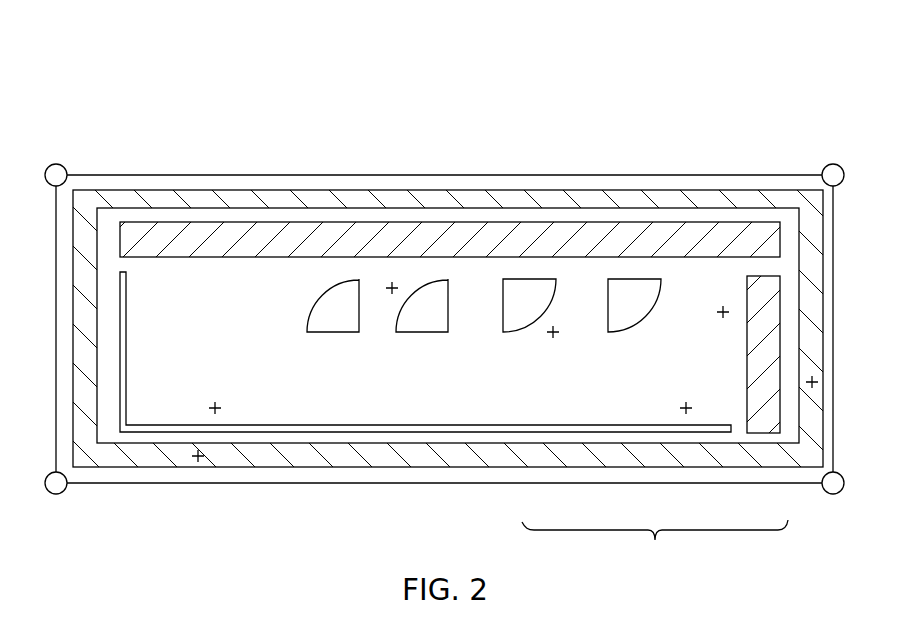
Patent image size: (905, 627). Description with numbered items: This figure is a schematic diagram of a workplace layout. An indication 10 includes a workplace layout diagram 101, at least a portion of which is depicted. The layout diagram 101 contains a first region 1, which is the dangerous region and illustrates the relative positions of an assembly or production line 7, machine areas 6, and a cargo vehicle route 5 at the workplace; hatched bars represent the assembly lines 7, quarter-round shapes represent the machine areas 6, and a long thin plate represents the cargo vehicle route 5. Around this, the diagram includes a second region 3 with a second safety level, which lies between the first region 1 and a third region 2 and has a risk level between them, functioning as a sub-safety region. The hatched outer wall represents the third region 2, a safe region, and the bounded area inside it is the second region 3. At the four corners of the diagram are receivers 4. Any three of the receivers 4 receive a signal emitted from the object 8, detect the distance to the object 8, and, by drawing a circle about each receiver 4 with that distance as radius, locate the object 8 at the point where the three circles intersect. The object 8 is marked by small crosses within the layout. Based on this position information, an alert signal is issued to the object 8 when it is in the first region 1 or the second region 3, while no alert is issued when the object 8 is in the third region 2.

The first region 1 is at (655, 541).
The third region 2 is at (327, 455).
The second region 3 is at (563, 403).
The receiver 4 is at (59, 166).
The cargo vehicle route 5 is at (630, 428).
The machine area 6 is at (336, 322).
The assembly or production line 7 is at (648, 235).
The object 8 is at (212, 405).
The indication 10 is at (463, 125).
The workplace layout diagram 101 is at (150, 158).